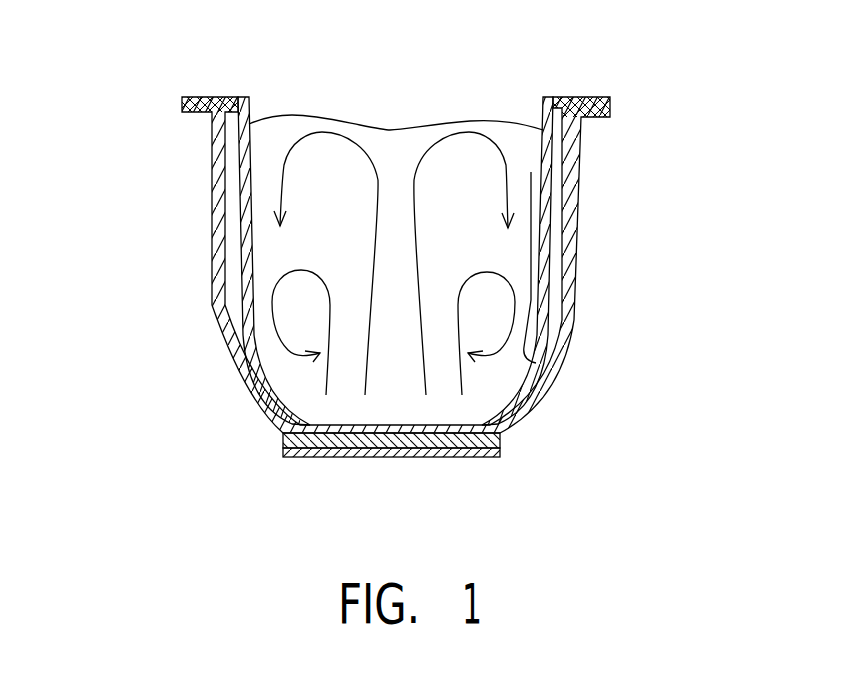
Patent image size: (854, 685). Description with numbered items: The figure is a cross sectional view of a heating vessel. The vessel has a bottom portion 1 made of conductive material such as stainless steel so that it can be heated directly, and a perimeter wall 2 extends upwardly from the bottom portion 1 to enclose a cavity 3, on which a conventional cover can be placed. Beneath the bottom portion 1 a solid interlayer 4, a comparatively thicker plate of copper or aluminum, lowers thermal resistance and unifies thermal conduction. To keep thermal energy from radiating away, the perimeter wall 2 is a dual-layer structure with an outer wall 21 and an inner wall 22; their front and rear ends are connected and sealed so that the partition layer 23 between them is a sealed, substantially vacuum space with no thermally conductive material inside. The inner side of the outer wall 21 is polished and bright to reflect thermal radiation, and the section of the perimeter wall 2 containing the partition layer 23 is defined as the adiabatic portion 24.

The bottom portion 1 is at (375, 273).
The perimeter wall 2 is at (197, 223).
The outer wall 21 is at (572, 298).
The inner wall 22 is at (248, 158).
The partition layer 23 is at (557, 181).
The adiabatic portion 24 is at (540, 110).
The cavity 3 is at (388, 160).
The solid interlayer 4 is at (496, 440).